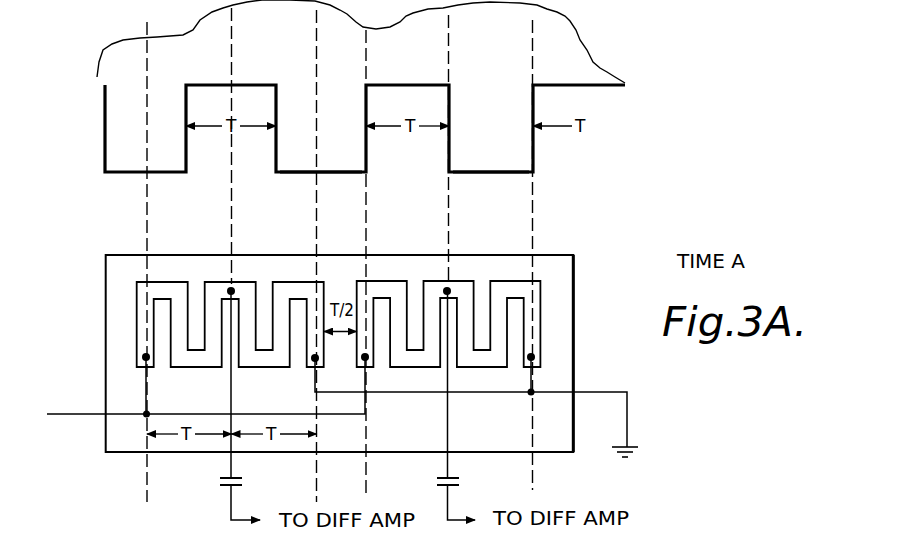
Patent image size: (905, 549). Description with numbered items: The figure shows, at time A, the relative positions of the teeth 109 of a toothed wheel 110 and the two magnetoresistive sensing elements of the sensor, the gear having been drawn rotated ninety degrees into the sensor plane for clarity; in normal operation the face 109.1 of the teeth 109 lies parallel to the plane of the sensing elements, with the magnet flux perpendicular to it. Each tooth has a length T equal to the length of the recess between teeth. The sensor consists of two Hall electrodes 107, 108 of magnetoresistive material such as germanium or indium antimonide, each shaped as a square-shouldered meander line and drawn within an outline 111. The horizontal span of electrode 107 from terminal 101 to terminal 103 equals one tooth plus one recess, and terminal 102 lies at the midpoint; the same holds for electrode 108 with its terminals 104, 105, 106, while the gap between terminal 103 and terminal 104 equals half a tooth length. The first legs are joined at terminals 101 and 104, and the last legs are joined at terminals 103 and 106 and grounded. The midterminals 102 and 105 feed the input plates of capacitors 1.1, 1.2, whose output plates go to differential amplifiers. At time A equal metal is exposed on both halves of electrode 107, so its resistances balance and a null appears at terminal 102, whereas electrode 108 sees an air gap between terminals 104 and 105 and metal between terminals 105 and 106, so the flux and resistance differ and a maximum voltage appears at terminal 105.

The terminal 101 is at (146, 357).
The terminal 102 is at (231, 288).
The terminal 103 is at (315, 358).
The terminal 104 is at (365, 357).
The terminal 105 is at (447, 290).
The terminal 106 is at (531, 357).
The Hall electrode 107 is at (137, 318).
The Hall electrode 108 is at (540, 313).
The teeth 109 is at (105, 153).
The face of the teeth 109.1 is at (303, 173).
The toothed wheel 110 is at (593, 62).
The sensor substrate 111 is at (575, 255).
The capacitor 1.1 is at (222, 479).
The capacitor 1.2 is at (460, 478).